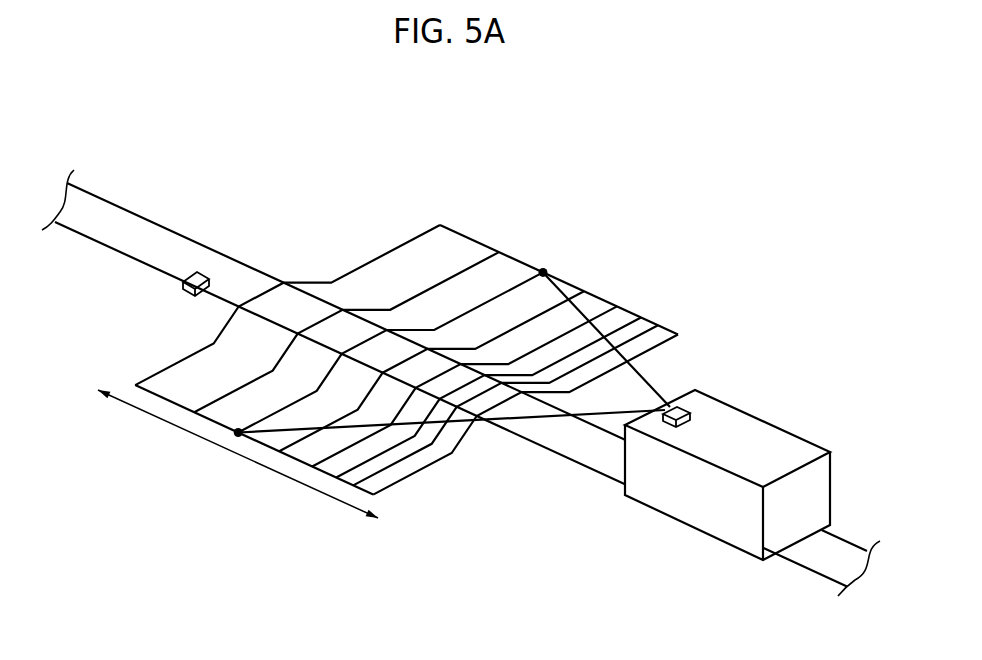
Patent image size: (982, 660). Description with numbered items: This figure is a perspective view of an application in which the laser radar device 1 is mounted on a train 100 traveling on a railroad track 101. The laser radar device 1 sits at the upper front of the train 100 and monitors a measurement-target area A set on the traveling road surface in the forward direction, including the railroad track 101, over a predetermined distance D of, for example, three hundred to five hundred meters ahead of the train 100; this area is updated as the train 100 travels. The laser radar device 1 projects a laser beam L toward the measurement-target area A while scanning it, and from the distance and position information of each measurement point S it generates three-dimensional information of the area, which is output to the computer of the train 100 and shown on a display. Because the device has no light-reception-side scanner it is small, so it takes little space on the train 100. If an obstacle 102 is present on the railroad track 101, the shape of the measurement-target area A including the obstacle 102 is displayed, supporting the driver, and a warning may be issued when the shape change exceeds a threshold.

The laser radar device 1 is at (698, 400).
The train 100 is at (758, 435).
The railroad track 101 is at (128, 212).
The obstacle 102 is at (181, 286).
The measurement-target area A is at (462, 247).
The measurement point S is at (545, 267).
The laser beam L is at (578, 309).
The predetermined distance D is at (210, 444).